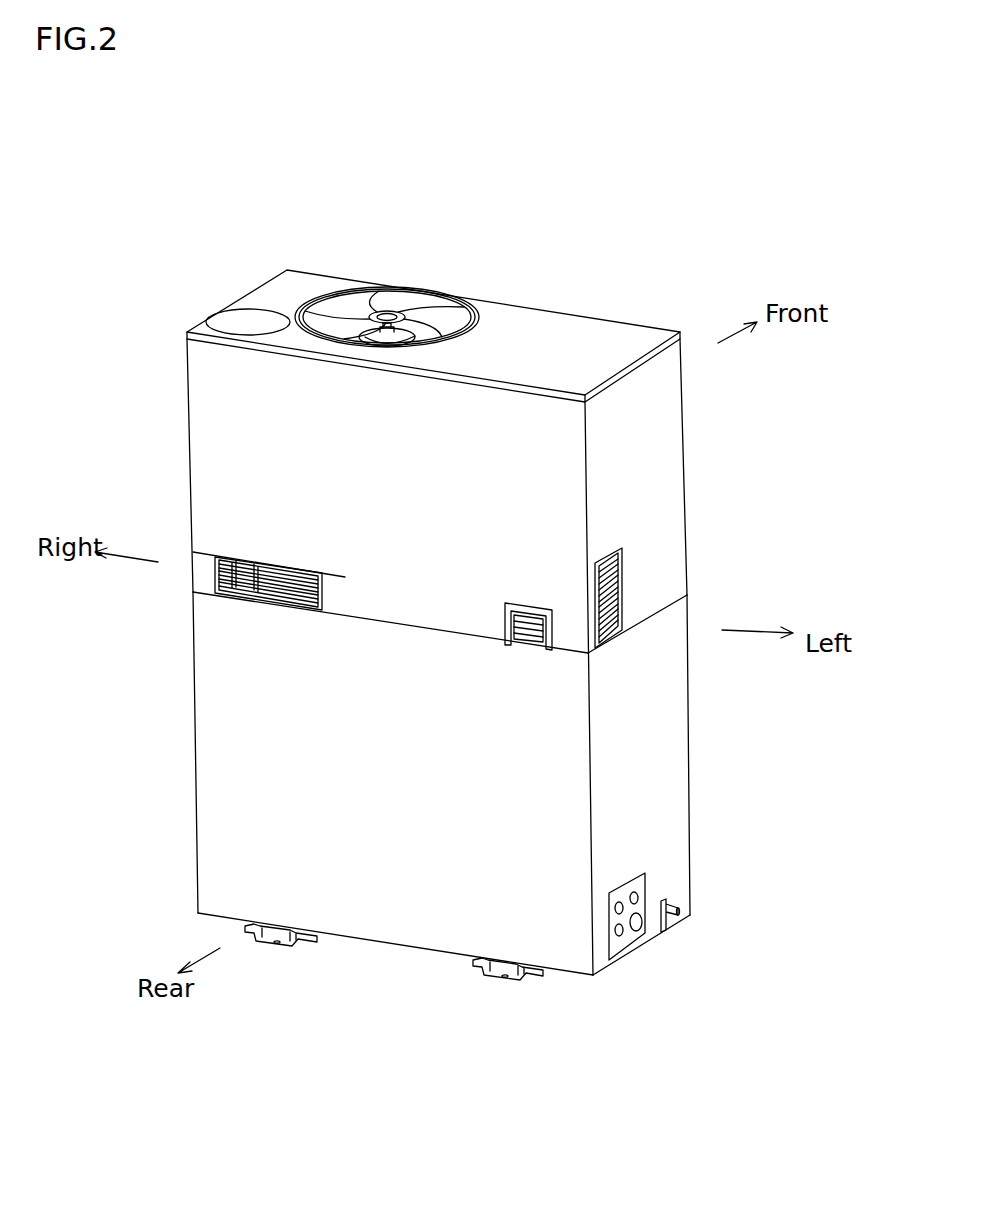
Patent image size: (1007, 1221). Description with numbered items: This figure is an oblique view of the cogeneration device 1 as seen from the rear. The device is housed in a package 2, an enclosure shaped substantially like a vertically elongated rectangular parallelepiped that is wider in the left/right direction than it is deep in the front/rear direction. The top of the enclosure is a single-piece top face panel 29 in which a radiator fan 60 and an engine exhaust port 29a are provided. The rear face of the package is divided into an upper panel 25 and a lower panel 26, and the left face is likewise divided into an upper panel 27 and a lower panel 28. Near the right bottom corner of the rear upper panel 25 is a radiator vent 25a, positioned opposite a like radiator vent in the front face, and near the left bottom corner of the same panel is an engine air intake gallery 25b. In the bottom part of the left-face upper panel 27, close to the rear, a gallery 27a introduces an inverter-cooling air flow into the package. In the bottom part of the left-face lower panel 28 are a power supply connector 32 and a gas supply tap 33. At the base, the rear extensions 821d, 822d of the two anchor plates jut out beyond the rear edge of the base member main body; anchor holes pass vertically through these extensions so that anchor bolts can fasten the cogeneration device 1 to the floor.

The cogeneration device 1 is at (618, 231).
The package 2 is at (350, 268).
The radiator fan 60 is at (425, 318).
The top face panel 29 is at (535, 328).
The engine exhaust port 29a is at (233, 318).
The upper panel 25 is at (217, 437).
The lower panel 26 is at (217, 770).
The upper panel 27 is at (665, 464).
The lower panel 28 is at (668, 778).
The radiator vent 25a is at (243, 597).
The engine air intake gallery 25b is at (527, 628).
The gallery 27a is at (615, 590).
The power supply connector 32 is at (628, 947).
The gas supply tap 33 is at (687, 915).
The rear extension 821d is at (277, 947).
The rear extension 822d is at (500, 978).